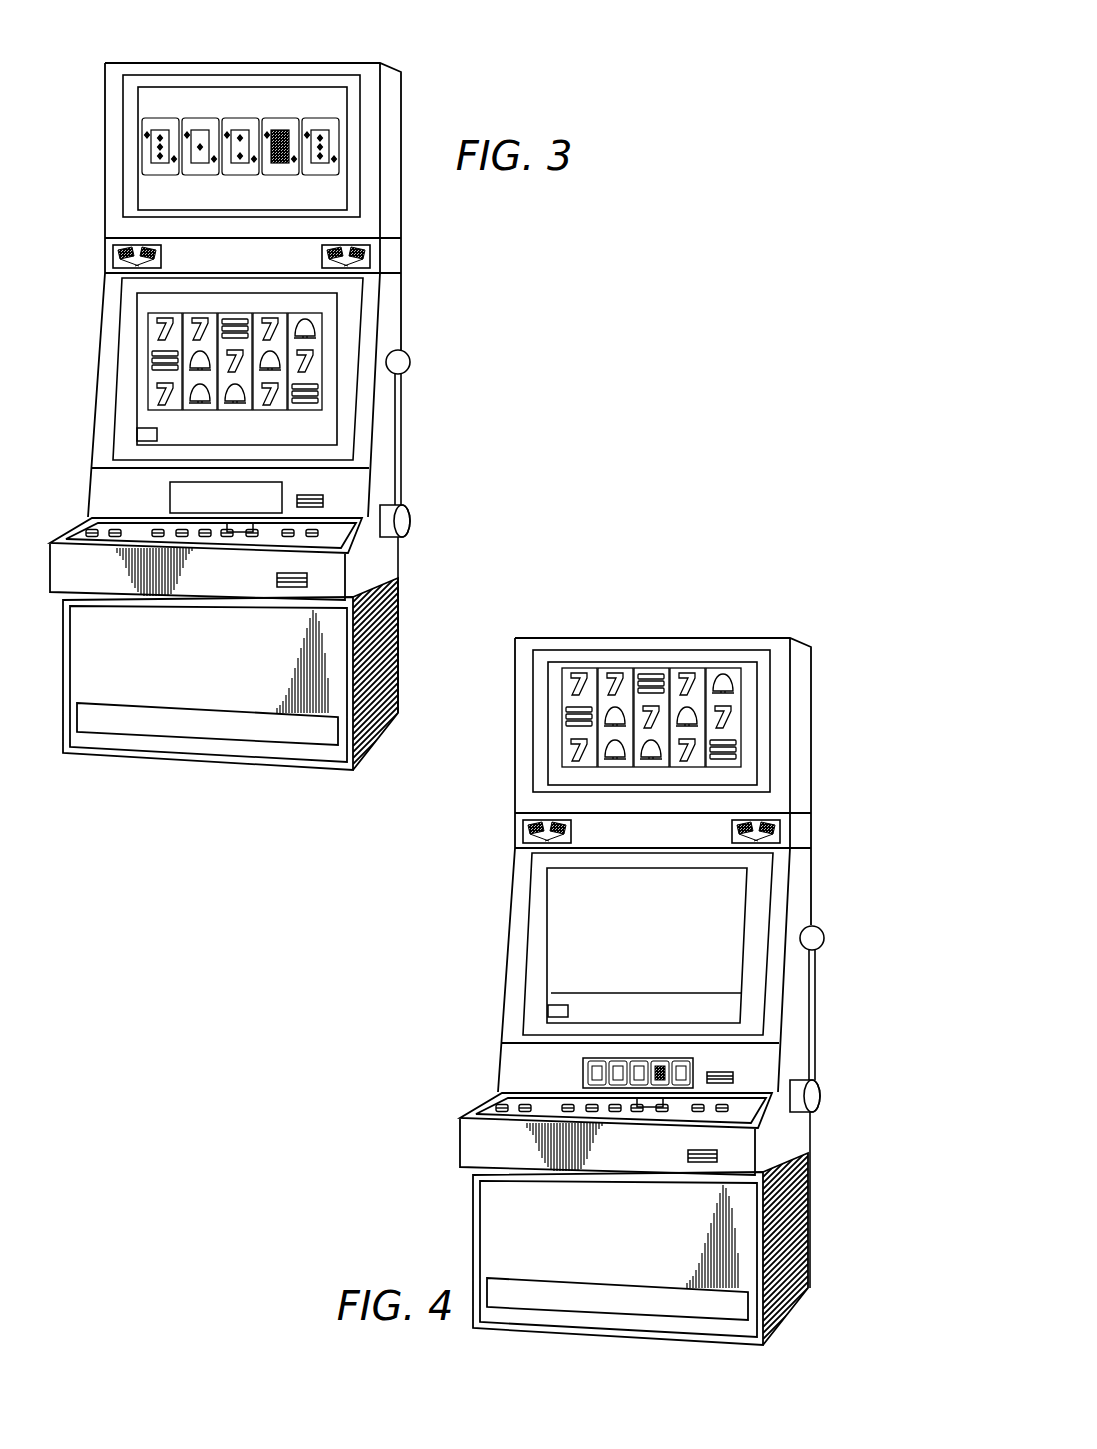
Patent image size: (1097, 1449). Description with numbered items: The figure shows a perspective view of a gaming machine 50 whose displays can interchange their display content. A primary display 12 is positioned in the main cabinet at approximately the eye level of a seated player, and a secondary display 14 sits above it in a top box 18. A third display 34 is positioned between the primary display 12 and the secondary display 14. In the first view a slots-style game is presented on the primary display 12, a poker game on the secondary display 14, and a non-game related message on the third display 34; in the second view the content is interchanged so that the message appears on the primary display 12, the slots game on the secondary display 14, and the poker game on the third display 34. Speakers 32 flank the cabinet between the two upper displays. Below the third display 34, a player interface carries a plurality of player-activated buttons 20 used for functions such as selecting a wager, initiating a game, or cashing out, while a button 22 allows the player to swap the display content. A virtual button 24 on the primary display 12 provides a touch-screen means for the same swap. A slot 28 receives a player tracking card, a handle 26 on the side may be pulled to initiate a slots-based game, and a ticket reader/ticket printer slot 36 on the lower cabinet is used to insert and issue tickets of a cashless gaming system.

In FIG. 3, the gaming machine 50 is at (184, 44).
In FIG. 3, the secondary display 14 is at (333, 103).
In FIG. 4, the secondary display 14 is at (663, 688).
In FIG. 3, the speakers 32 is at (113, 257).
In FIG. 4, the speakers 32 is at (650, 829).
In FIG. 3, the primary display 12 is at (330, 330).
In FIG. 4, the primary display 12 is at (691, 944).
In FIG. 3, the handle 26 is at (398, 362).
In FIG. 4, the handle 26 is at (821, 1107).
In FIG. 3, the virtual button 24 is at (137, 434).
In FIG. 4, the virtual button 24 is at (509, 1005).
In FIG. 3, the slot for receiving a player tracking card 28 is at (323, 501).
In FIG. 4, the slot for receiving a player tracking card 28 is at (785, 1064).
In FIG. 3, the third display 34 is at (170, 500).
In FIG. 4, the third display 34 is at (570, 1070).
In FIG. 3, the top box 18 is at (333, 538).
In FIG. 3, the ticket reader/ticket printer slot 36 is at (307, 580).
In FIG. 4, the ticket reader/ticket printer slot 36 is at (683, 1199).
In FIG. 3, the button 22 is at (92, 538).
In FIG. 4, the button 22 is at (462, 1102).
In FIG. 3, the player-activated buttons 20 is at (158, 538).
In FIG. 4, the player-activated buttons 20 is at (623, 1177).